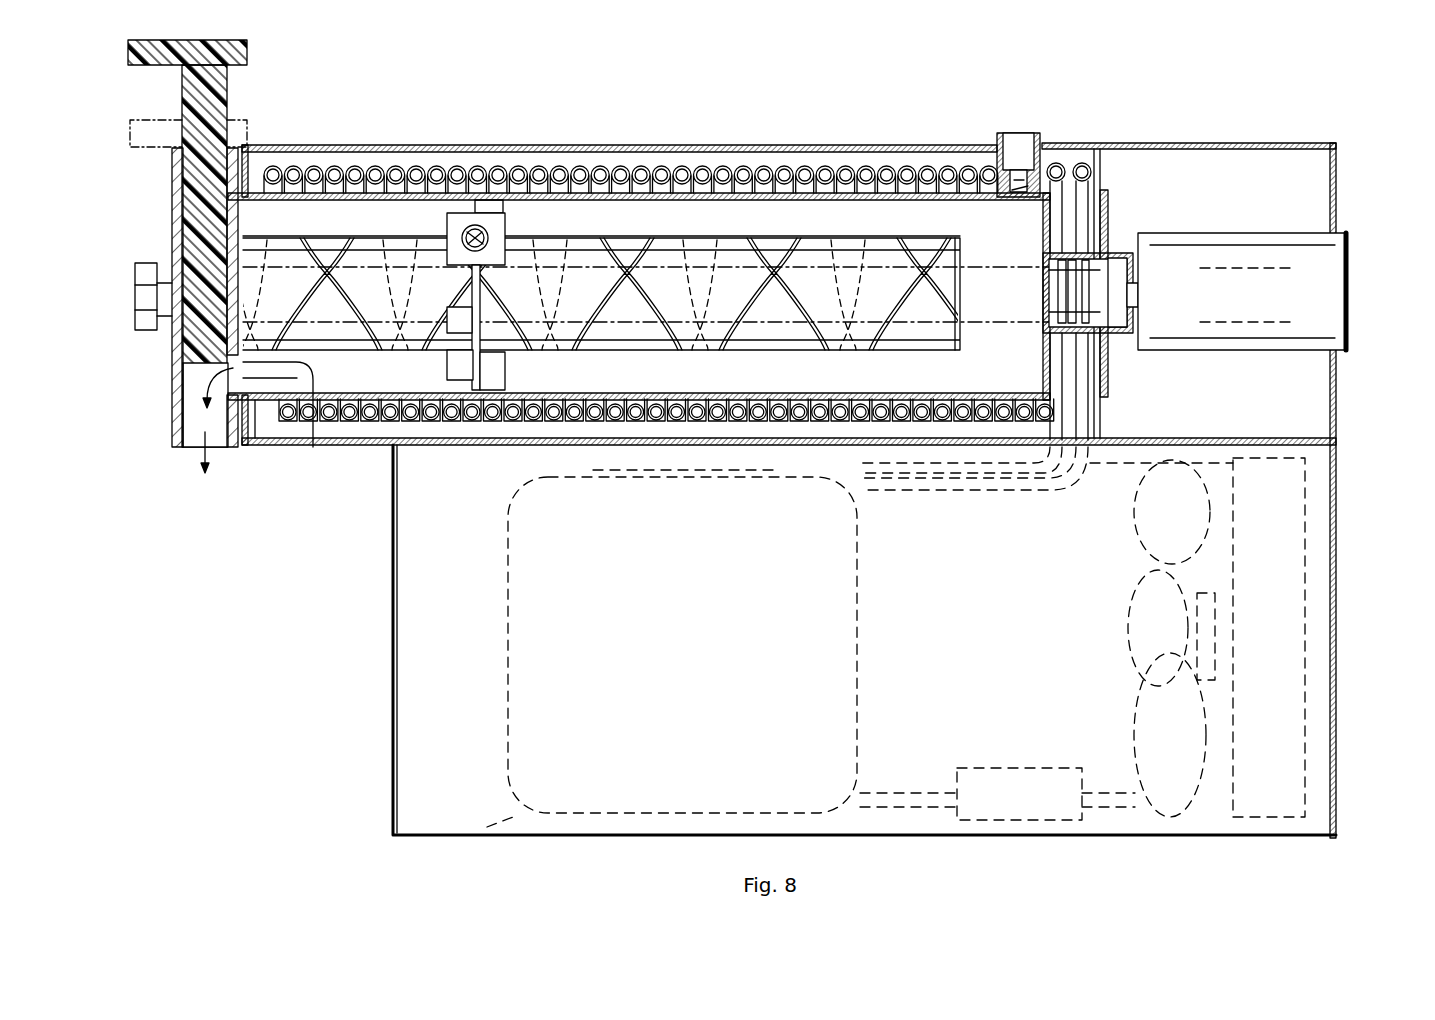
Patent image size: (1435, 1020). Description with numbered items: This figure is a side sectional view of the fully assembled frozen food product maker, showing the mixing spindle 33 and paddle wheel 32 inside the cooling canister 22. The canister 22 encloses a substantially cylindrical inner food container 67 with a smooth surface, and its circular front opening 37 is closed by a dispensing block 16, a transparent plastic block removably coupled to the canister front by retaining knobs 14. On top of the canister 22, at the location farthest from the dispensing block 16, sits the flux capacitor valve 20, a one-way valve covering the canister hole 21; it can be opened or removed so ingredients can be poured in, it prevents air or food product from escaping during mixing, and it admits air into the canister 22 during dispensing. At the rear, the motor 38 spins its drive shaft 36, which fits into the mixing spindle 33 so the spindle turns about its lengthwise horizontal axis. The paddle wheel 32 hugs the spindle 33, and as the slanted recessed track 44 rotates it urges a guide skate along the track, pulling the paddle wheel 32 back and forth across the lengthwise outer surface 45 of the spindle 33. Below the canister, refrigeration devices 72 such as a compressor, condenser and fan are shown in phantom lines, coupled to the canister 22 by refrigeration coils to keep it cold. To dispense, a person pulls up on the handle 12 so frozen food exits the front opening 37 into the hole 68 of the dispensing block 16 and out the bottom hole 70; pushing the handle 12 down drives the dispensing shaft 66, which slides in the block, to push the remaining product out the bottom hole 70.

The handle 12 is at (147, 122).
The retaining knobs 14 is at (140, 263).
The dispensing block 16 is at (162, 375).
The flux capacitor valve 20 is at (1016, 120).
The canister hole 21 is at (1047, 140).
The cooling canister 22 is at (345, 147).
The paddle wheel 32 is at (522, 222).
The mixing spindle 33 is at (688, 220).
The drive shaft 36 is at (1140, 292).
The front opening 37 is at (313, 447).
The motor 38 is at (1297, 293).
The recessed track 44 is at (606, 238).
The lengthwise outer surface 45 is at (403, 237).
The dispensing shaft 66 is at (228, 100).
The inner food container 67 is at (818, 205).
The hole 68 is at (233, 372).
The bottom hole 70 is at (193, 447).
The refrigeration devices 72 is at (527, 632).